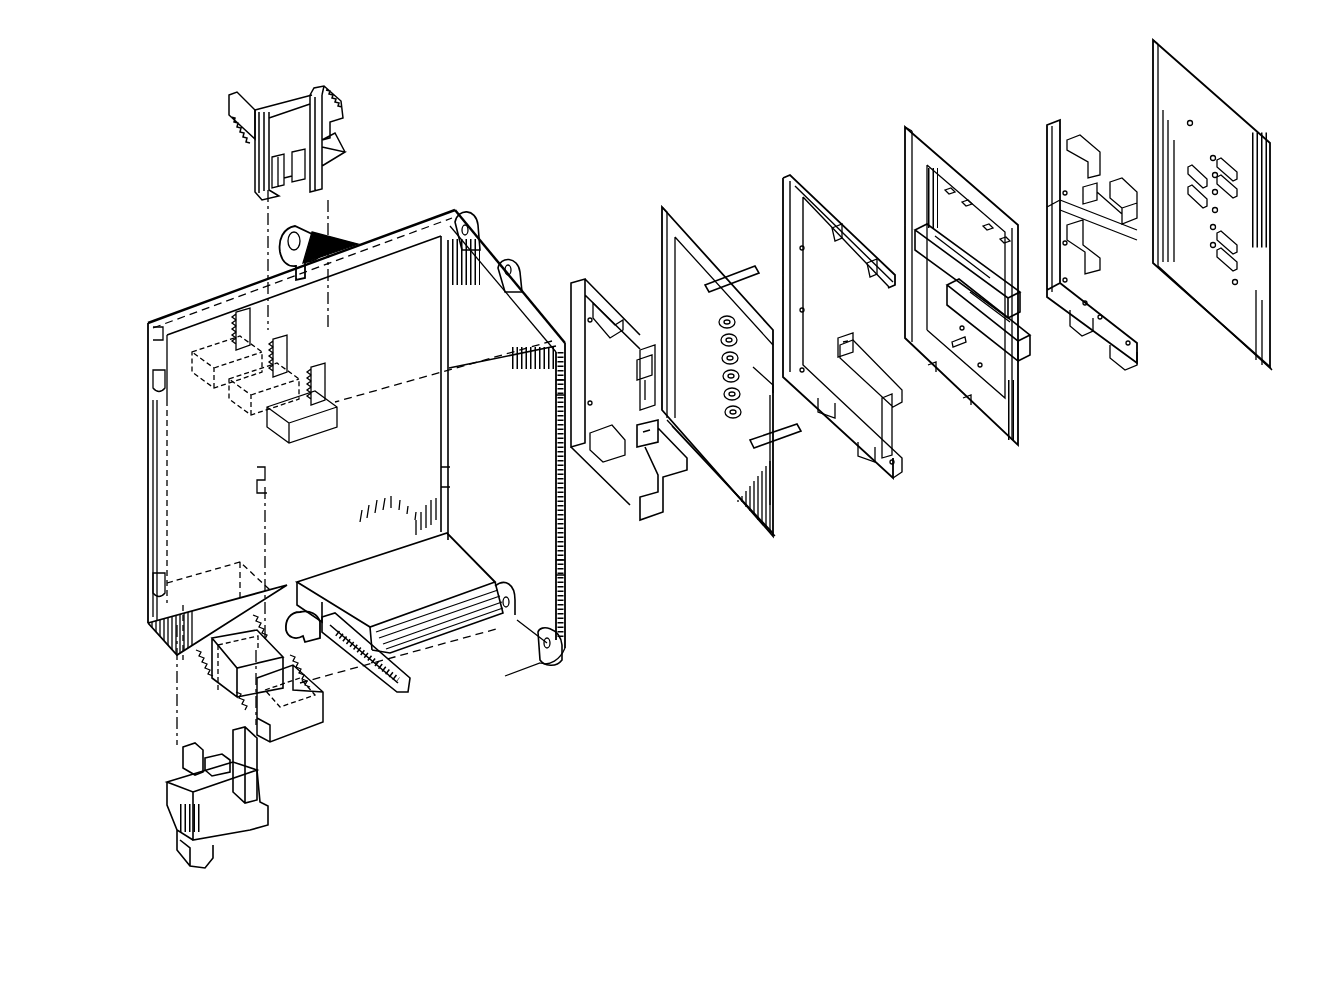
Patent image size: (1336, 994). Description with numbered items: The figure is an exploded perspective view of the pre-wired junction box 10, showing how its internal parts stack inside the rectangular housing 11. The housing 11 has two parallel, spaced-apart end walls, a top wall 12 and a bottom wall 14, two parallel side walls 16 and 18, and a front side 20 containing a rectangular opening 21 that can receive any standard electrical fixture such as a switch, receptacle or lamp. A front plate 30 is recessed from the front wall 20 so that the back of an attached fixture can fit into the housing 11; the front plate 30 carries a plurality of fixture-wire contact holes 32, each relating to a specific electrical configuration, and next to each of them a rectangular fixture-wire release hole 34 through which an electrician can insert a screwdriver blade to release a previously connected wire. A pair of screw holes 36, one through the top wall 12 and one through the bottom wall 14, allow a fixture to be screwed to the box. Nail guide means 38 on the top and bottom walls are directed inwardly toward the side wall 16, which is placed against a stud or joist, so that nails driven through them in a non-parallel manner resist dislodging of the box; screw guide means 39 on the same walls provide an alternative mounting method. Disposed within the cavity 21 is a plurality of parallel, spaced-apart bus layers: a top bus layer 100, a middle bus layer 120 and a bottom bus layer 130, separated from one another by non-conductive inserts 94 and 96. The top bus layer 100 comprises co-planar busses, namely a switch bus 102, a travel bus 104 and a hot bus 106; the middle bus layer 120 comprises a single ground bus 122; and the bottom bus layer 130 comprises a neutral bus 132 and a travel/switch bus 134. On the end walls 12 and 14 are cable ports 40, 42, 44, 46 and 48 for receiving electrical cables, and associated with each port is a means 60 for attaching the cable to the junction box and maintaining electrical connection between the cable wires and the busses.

The pre-wired junction box 10 is at (1098, 518).
The rectangular housing 11 is at (207, 298).
The top wall 12 is at (503, 339).
The bottom wall 14 is at (418, 590).
The side wall 16 is at (407, 445).
The side wall 18 is at (511, 502).
The front side 20 is at (560, 543).
The rectangular opening 21 is at (515, 580).
The front plate 30 is at (1213, 110).
The fixture-wire contact holes 32 is at (1214, 158).
The fixture-wire release holes 34 is at (1237, 198).
The screw holes 36 is at (506, 262).
The nail guide means 38 is at (303, 237).
The screw guide means 39 is at (465, 220).
The cable port 40 is at (213, 660).
The cable port 42 is at (285, 700).
The cable port 44 is at (255, 320).
The cable port 46 is at (290, 358).
The cable port 48 is at (325, 392).
The cable attaching means 60 is at (325, 92).
The non-conductive insert 94 is at (1017, 407).
The non-conductive insert 96 is at (770, 480).
The top bus layer 100 is at (1135, 370).
The switch bus 102 is at (1057, 122).
The travel bus 104 is at (1134, 192).
The hot bus 106 is at (1075, 320).
The middle bus layer 120 is at (888, 485).
The ground bus 122 is at (793, 178).
The bottom bus layer 130 is at (652, 522).
The neutral bus 132 is at (577, 283).
The travel/switch bus 134 is at (650, 350).